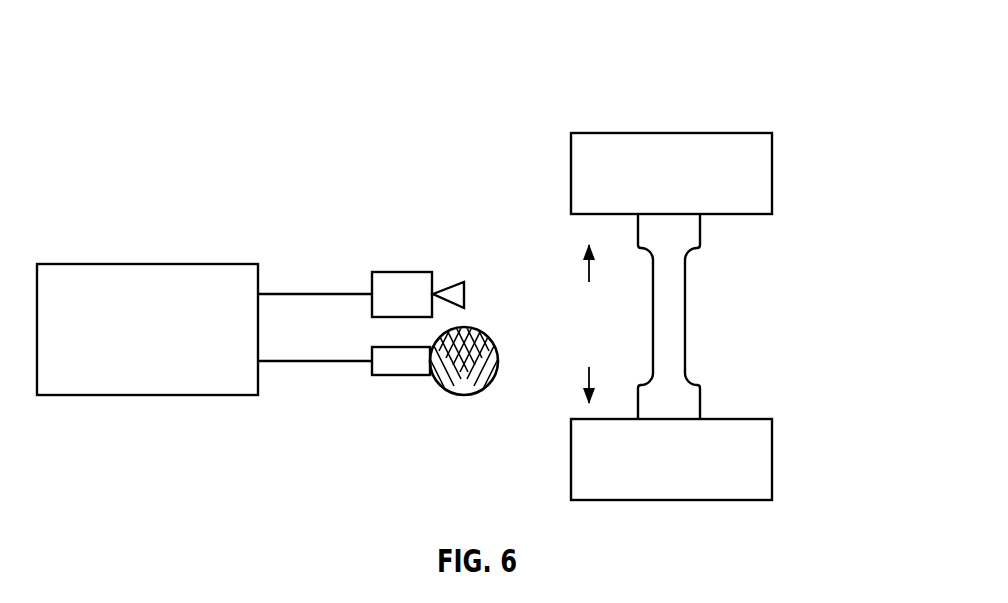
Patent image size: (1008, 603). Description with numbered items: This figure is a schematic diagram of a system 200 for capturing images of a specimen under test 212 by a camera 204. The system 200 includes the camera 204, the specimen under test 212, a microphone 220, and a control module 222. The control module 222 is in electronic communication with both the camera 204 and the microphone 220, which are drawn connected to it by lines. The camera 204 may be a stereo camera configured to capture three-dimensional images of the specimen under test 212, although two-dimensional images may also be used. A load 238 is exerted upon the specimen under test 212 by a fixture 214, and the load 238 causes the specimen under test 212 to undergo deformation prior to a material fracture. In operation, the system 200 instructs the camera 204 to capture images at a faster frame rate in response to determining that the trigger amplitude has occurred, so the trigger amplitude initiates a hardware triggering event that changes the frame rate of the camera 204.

The system 200 is at (793, 91).
The camera 204 is at (402, 272).
The specimen under test 212 is at (707, 319).
The fixture 214 is at (776, 455).
The microphone 220 is at (402, 375).
The control module 222 is at (170, 344).
The load 238 is at (587, 267).